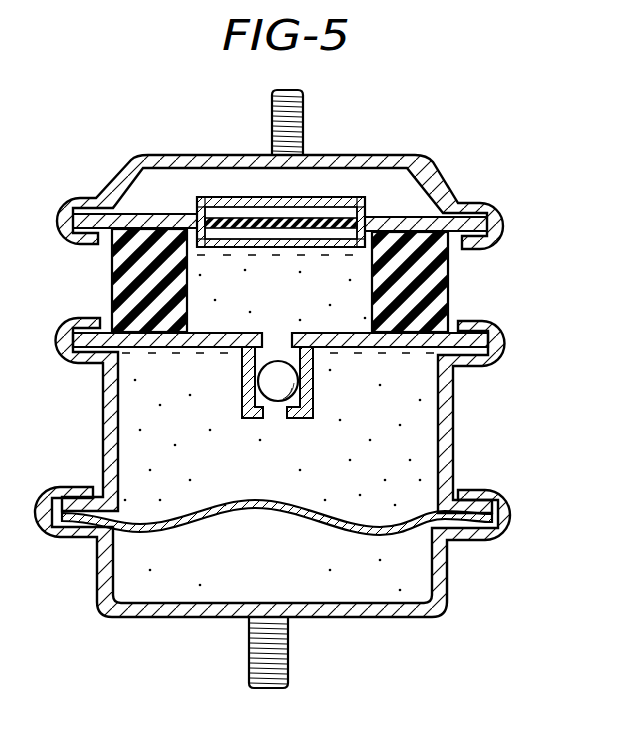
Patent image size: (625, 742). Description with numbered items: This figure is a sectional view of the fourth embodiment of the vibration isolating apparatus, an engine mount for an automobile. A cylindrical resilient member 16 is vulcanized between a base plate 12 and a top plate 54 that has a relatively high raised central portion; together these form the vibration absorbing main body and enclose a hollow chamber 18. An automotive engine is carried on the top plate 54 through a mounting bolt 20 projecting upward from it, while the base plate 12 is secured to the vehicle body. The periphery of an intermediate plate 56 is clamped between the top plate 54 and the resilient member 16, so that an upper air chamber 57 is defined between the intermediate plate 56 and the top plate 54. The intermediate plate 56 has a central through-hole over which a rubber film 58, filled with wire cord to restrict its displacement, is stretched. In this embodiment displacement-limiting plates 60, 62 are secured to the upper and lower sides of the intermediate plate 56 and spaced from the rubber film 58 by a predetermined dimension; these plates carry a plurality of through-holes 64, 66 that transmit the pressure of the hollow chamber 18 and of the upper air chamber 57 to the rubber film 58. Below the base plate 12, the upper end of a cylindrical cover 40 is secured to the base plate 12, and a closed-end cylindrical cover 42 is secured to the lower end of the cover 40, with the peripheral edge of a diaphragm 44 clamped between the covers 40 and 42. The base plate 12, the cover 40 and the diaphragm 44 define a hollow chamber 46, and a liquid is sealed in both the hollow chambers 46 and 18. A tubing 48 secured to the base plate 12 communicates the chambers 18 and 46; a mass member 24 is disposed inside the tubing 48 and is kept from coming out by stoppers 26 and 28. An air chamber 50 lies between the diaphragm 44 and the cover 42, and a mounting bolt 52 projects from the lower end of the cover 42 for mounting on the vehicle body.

The base plate 12 is at (147, 348).
The cylindrical resilient member 16 is at (449, 282).
The hollow chamber 18 is at (289, 306).
The mounting bolt 20 is at (306, 120).
The mass member 24 is at (299, 380).
The stopper 26 is at (257, 359).
The stopper 28 is at (280, 417).
The cylindrical cover 40 is at (453, 443).
The cylindrical cover with closed end 42 is at (448, 583).
The diaphragm 44 is at (315, 518).
The hollow chamber 46 is at (254, 474).
The tubing 48 is at (242, 398).
The air chamber 50 is at (243, 561).
The mounting bolt 52 is at (291, 653).
The top plate 54 is at (437, 178).
The intermediate plate 56 is at (409, 218).
The air chamber 57 is at (180, 195).
The rubber film 58 is at (267, 207).
The displacement-limiting plate 60 is at (295, 229).
The displacement-limiting plate 62 is at (344, 250).
The through-holes 64 is at (330, 202).
The through-holes 66 is at (279, 250).